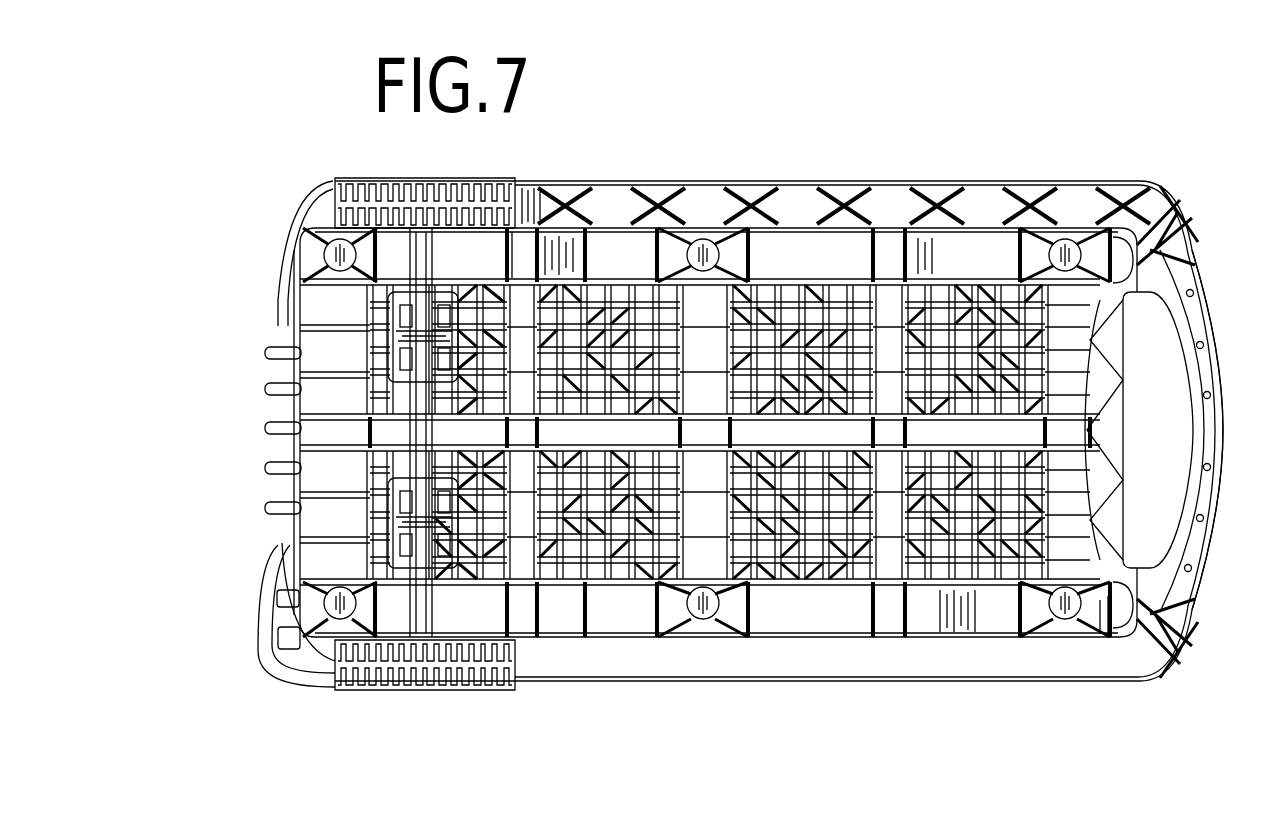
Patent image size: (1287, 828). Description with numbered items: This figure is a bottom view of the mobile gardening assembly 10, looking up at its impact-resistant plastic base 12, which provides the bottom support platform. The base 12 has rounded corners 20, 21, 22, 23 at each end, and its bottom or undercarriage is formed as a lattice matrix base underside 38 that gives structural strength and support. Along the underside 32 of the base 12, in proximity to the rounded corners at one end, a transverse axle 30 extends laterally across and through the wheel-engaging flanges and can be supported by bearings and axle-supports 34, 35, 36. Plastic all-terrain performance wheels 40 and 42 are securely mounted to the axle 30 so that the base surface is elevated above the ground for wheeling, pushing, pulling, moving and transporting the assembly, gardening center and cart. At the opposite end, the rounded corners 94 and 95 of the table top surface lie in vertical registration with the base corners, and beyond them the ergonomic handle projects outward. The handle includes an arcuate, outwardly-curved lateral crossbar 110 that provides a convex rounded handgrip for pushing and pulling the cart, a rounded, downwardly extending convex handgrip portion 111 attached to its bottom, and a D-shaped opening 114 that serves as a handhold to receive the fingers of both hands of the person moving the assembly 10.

The tray 10 is at (1155, 167).
The base 12 is at (877, 181).
The rounded corner 20 is at (280, 685).
The rounded corner 21 is at (330, 199).
The rounded corner 22 is at (1166, 208).
The rounded corner 23 is at (1170, 653).
The transverse axle 30 is at (432, 606).
The underside 32 is at (511, 268).
The axle-support 34 is at (400, 317).
The axle-support 35 is at (385, 424).
The axle-support 36 is at (398, 483).
The lattice matrix base underside 38 is at (707, 613).
The all-terrain performance wheel 40 is at (392, 691).
The all-terrain performance wheel 42 is at (371, 179).
The rounded corner 94 is at (1152, 681).
The rounded corner 95 is at (1176, 216).
The lateral crossbar 110 is at (1222, 393).
The convex handgrip portion 111 is at (1204, 323).
The D-shaped opening 114 is at (1192, 468).